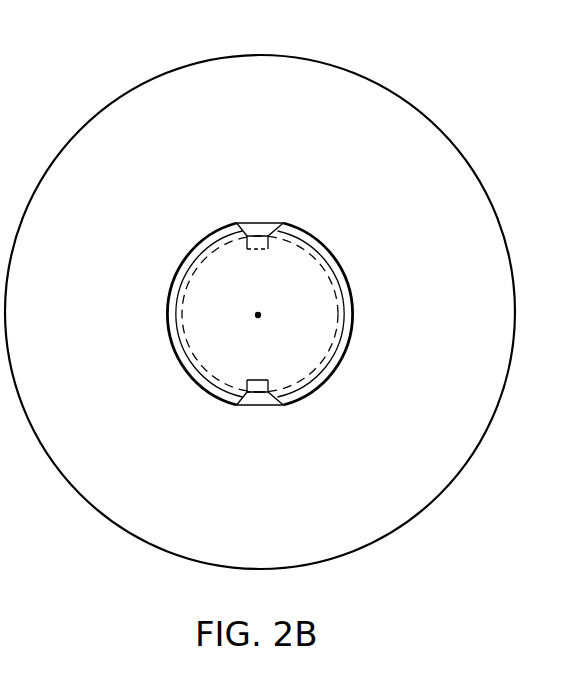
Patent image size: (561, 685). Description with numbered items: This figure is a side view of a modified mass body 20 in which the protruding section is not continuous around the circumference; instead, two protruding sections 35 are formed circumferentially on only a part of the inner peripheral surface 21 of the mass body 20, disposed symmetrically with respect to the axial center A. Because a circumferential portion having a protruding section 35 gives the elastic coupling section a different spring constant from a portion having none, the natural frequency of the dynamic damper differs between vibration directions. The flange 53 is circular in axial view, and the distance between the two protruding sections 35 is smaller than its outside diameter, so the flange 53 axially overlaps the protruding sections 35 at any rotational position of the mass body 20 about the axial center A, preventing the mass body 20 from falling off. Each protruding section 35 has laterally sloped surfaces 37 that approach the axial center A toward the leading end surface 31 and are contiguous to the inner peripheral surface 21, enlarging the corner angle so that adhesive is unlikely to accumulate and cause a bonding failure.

The mass body 20 is at (333, 96).
The inner peripheral surface 21 is at (349, 294).
The flange 53 is at (302, 252).
The protruding section 35 is at (258, 222).
The laterally sloped surface 37 is at (233, 239).
The leading end surface 31 is at (260, 250).
The axial center A is at (250, 320).